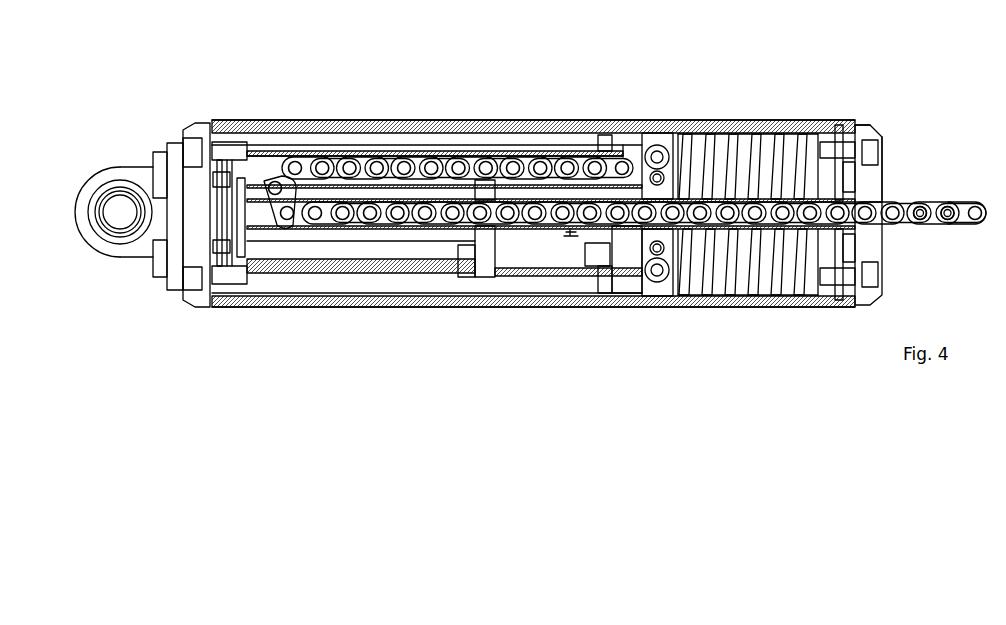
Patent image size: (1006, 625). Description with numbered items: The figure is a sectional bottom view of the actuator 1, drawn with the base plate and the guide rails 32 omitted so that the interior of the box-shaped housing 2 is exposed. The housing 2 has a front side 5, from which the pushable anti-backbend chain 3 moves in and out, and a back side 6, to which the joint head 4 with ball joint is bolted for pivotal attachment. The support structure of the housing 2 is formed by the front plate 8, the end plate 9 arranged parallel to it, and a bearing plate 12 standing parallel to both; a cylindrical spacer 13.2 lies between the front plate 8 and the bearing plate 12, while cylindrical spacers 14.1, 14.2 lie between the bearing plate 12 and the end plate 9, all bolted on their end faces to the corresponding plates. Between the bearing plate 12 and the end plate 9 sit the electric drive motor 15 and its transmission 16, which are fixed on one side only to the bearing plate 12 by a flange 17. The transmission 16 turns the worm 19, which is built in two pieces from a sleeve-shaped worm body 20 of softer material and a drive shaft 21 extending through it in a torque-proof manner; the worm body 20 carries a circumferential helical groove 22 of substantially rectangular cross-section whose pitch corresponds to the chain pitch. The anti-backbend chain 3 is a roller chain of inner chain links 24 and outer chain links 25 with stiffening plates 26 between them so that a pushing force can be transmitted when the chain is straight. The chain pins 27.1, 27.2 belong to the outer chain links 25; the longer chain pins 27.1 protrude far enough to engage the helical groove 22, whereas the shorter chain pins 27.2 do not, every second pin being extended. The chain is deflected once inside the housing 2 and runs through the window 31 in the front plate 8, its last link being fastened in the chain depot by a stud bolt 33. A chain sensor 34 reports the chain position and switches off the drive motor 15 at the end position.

The actuator 1 is at (455, 104).
The housing 2 is at (318, 314).
The anti-backbend chain 3 is at (941, 190).
The joint head 4 is at (101, 163).
The front side 5 is at (871, 152).
The back side 6 is at (183, 127).
The front plate 8 is at (869, 298).
The end plate 9 is at (199, 308).
The bearing plate 12 is at (655, 300).
The cylindrical spacer 13.2 is at (821, 144).
The cylindrical spacer 14.1 is at (371, 300).
The cylindrical spacer 14.2 is at (432, 138).
The electric drive motor 15 is at (262, 182).
The transmission 16 is at (542, 134).
The flange 17 is at (623, 158).
The worm 19 is at (751, 132).
The worm body 20 is at (722, 130).
The drive shaft 21 is at (865, 125).
The helical groove 22 is at (785, 132).
The inner chain link 24 is at (963, 226).
The outer chain link 25 is at (946, 222).
The stiffening plate 26 is at (915, 226).
The chain pin 27.1 is at (923, 225).
The chain pin 27.2 is at (949, 210).
The window 31 is at (880, 200).
The guide rails 32 is at (503, 150).
The stud bolt 33 is at (649, 134).
The chain sensor 34 is at (571, 237).